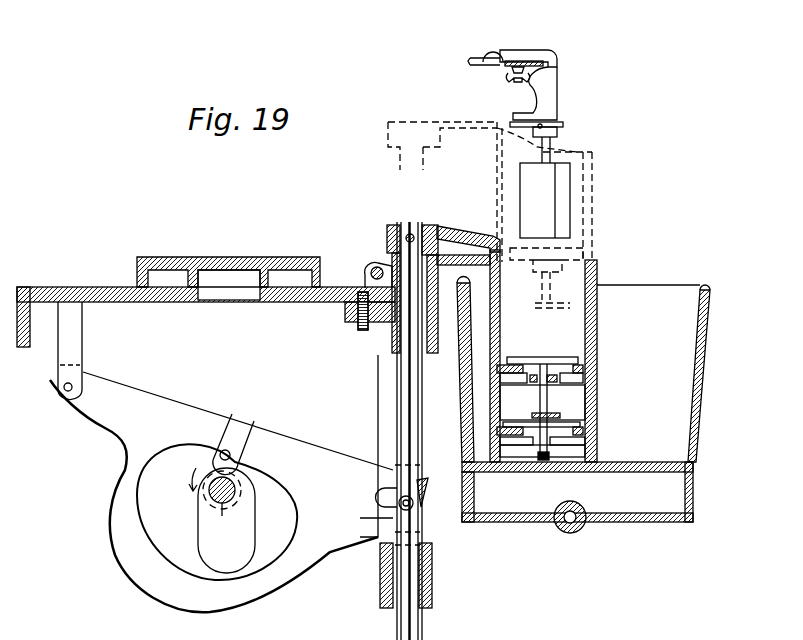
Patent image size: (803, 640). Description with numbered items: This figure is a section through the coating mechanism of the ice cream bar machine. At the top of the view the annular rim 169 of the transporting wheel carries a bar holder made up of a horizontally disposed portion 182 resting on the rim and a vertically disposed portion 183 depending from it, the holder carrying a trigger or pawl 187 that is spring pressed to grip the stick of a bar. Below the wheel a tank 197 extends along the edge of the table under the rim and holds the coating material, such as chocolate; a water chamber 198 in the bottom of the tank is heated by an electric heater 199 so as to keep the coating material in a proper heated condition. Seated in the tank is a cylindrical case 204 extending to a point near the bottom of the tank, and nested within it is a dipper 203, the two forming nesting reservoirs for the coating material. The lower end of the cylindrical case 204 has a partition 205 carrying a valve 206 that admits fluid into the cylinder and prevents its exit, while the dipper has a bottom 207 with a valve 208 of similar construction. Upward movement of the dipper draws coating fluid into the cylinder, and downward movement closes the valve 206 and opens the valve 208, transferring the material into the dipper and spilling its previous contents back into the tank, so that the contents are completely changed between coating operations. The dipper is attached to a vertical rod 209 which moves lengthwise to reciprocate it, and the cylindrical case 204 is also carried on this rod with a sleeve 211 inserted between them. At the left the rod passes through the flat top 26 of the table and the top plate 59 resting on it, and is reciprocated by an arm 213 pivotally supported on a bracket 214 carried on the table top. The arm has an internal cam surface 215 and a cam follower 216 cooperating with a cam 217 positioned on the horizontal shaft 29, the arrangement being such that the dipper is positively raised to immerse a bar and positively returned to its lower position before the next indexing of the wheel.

The annular rim 169 is at (470, 58).
The horizontally disposed portion 182 is at (522, 53).
The vertically disposed portion 183 is at (550, 78).
The trigger or pawl 187 is at (557, 122).
The valve 208 is at (562, 180).
The dipper 203 is at (455, 227).
The sleeve 211 is at (383, 265).
The cylindrical case 204 is at (598, 273).
The top plate 59 is at (150, 258).
The flat top 26 is at (58, 287).
The bracket 214 is at (72, 349).
The arm 213 is at (165, 405).
The vertical rod 209 is at (403, 405).
The bottom 207 is at (583, 373).
The tank 197 is at (705, 337).
The valve 206 is at (567, 423).
The partition 205 is at (595, 428).
The internal cam surface 215 is at (118, 482).
The cam follower 216 is at (213, 460).
The shaft 29 is at (237, 488).
The cam 217 is at (226, 520).
The water chamber 198 is at (577, 492).
The electric heater 199 is at (580, 537).